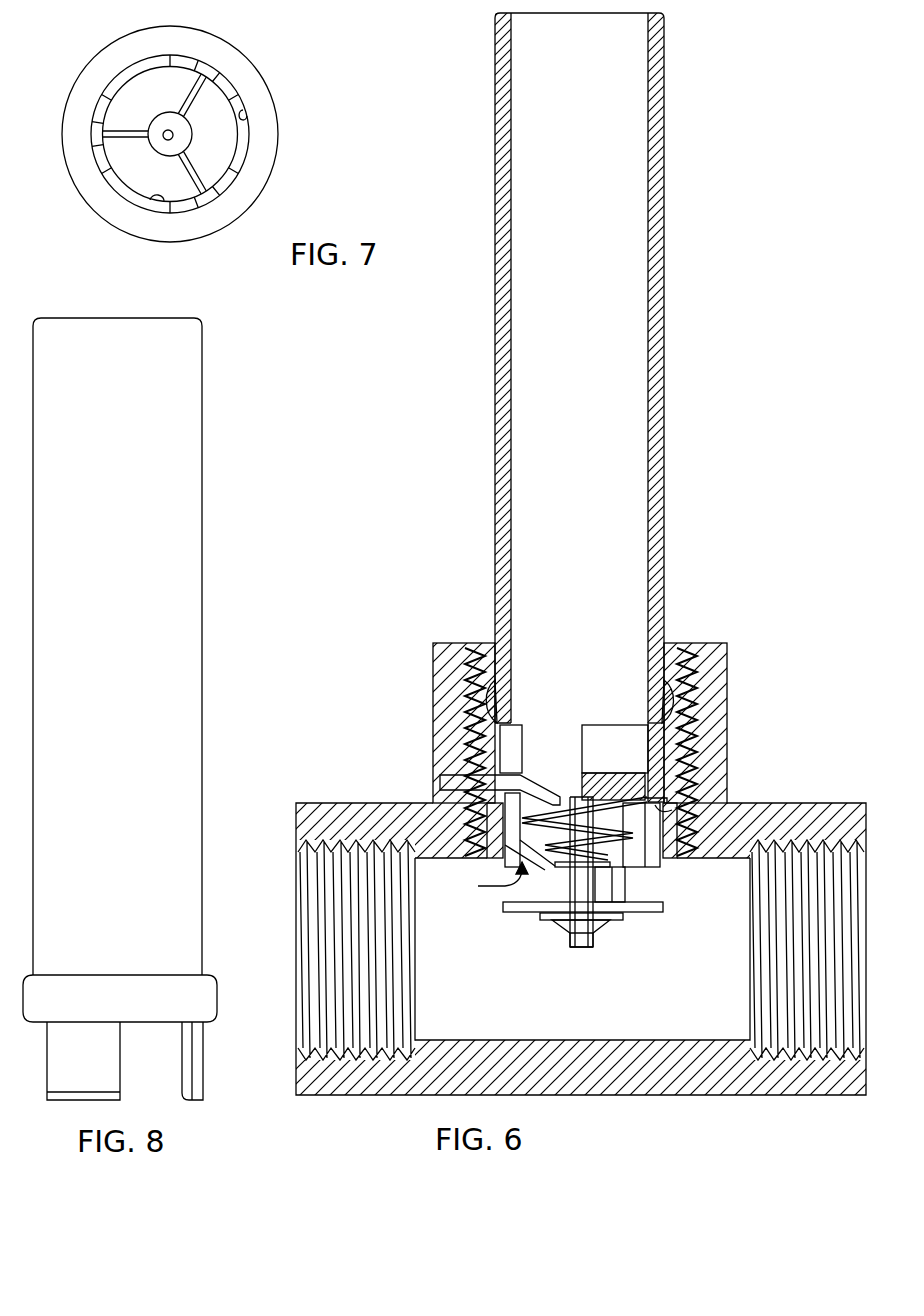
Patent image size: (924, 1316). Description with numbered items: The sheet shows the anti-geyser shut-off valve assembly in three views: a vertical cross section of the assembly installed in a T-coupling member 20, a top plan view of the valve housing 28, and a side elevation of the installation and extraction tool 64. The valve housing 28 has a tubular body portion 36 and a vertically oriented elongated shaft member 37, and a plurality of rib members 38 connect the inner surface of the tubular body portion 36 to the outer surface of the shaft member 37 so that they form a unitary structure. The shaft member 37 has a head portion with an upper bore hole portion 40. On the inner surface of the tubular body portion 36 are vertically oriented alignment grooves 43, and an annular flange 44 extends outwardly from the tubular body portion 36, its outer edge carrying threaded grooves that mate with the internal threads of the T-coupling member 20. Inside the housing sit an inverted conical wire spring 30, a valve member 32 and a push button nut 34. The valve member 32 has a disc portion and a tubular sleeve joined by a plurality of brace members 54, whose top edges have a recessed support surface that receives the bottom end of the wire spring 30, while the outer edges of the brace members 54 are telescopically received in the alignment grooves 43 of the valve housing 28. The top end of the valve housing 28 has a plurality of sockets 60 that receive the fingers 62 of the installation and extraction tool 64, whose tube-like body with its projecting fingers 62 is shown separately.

In FIG. 6, the T-coupling member 20 is at (600, 1018).
In FIG. 7, the valve housing 28 is at (278, 164).
In FIG. 6, the valve housing 28 is at (665, 770).
In FIG. 6, the inverted conical wire spring 30 is at (572, 800).
In FIG. 6, the valve member 32 is at (504, 904).
In FIG. 7, the push button nut 34 is at (165, 117).
In FIG. 6, the push button nut 34 is at (600, 926).
In FIG. 7, the tubular body portion 36 is at (225, 78).
In FIG. 6, the shaft member 37 is at (576, 942).
In FIG. 7, the rib member 38 is at (117, 140).
In FIG. 7, the upper bore hole portion 40 is at (173, 138).
In FIG. 6, the alignment groove 43 is at (512, 800).
In FIG. 7, the annular flange 44 is at (247, 193).
In FIG. 6, the brace member 54 is at (562, 897).
In FIG. 7, the socket 60 is at (247, 118).
In FIG. 6, the socket 60 is at (665, 815).
In FIG. 8, the finger 62 is at (97, 1051).
In FIG. 6, the finger 62 is at (660, 745).
In FIG. 8, the installation and extraction tool 64 is at (211, 550).
In FIG. 6, the installation and extraction tool 64 is at (488, 433).